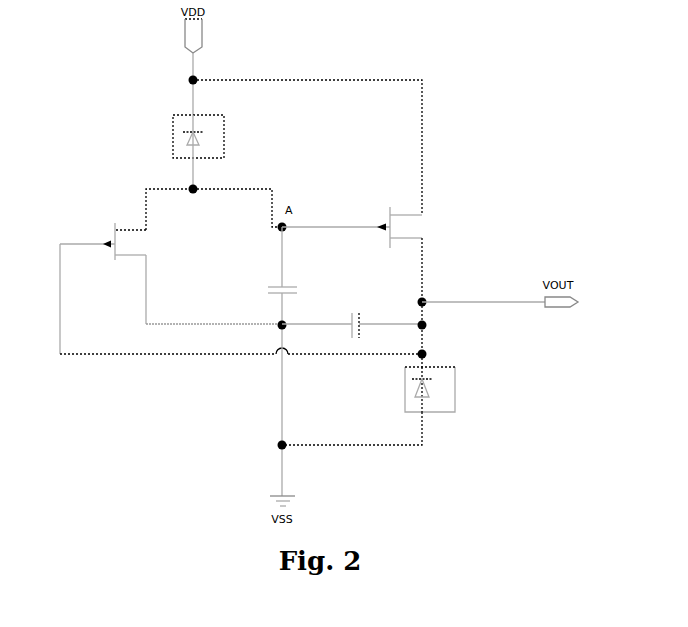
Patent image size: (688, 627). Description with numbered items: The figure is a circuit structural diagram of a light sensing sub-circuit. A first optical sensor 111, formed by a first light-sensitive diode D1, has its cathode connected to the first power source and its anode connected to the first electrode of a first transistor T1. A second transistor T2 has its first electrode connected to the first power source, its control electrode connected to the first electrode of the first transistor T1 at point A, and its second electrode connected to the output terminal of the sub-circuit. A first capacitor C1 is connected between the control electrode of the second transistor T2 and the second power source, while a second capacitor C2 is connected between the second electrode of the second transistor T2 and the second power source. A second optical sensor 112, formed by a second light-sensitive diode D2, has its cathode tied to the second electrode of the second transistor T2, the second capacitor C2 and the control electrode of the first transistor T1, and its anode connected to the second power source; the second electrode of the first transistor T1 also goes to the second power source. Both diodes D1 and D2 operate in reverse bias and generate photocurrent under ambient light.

The first optical sensor 111 is at (219, 134).
The second optical sensor 112 is at (451, 386).
The first light-sensitive diode D1 is at (202, 136).
The second light-sensitive diode D2 is at (432, 389).
The first transistor T1 is at (111, 241).
The second transistor T2 is at (418, 227).
The first capacitor C1 is at (270, 289).
The second capacitor C2 is at (356, 318).